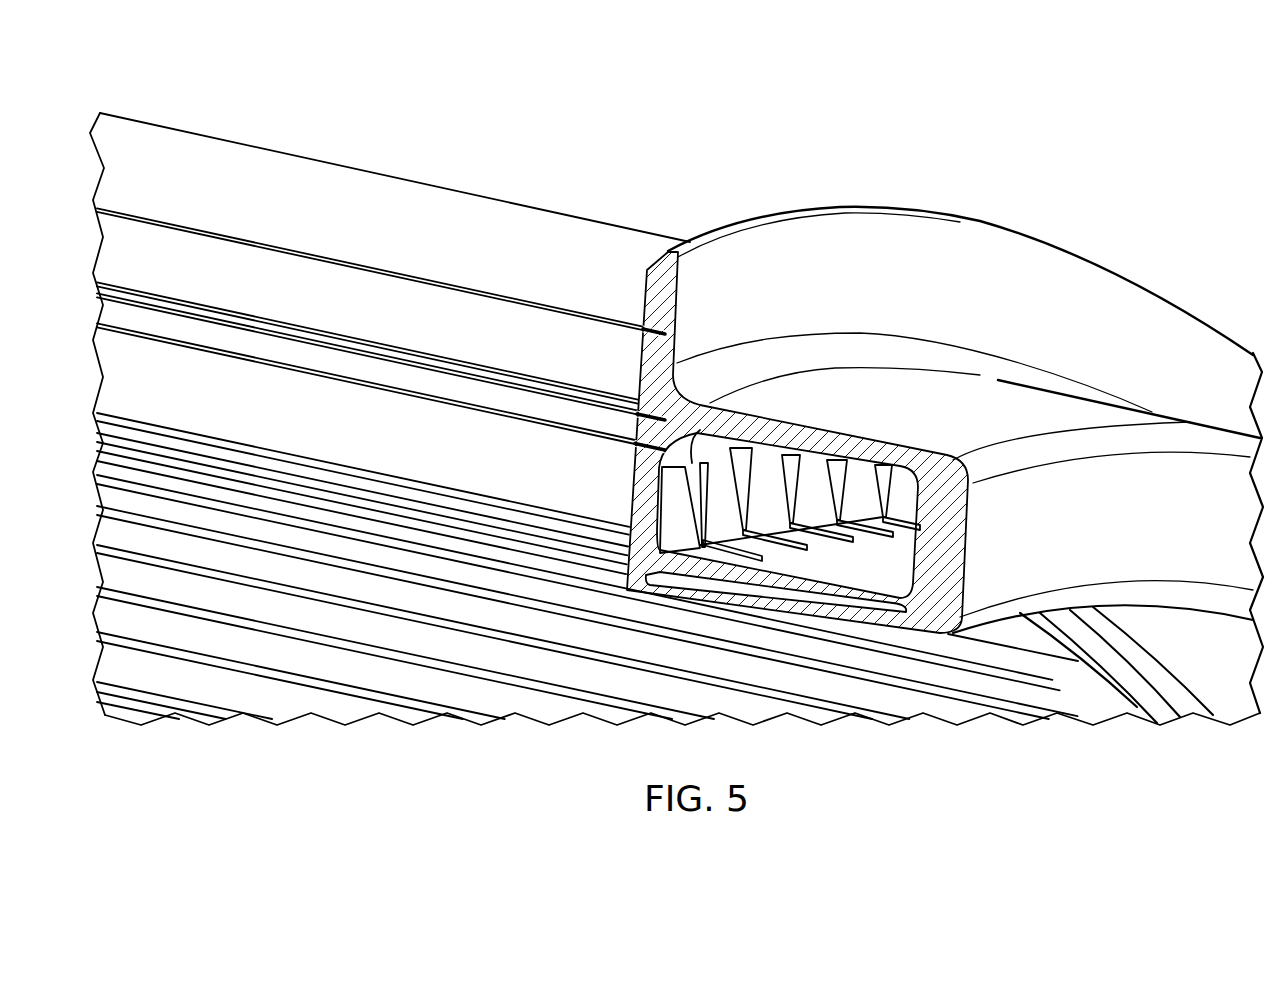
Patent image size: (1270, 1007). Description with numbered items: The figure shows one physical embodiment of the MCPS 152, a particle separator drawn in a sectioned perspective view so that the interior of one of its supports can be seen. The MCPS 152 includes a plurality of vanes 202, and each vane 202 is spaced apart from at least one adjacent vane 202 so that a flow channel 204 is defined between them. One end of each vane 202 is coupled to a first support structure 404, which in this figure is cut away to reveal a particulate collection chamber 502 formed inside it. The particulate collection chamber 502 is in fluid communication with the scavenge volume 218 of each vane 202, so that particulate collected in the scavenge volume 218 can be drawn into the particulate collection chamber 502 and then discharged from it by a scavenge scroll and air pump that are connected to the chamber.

The MCPS 152 is at (868, 121).
The vane 202 is at (530, 199).
The flow channel 204 is at (326, 177).
The first support structure 404 is at (936, 212).
The scavenge volume 218 is at (742, 456).
The particulate collection chamber 502 is at (858, 490).